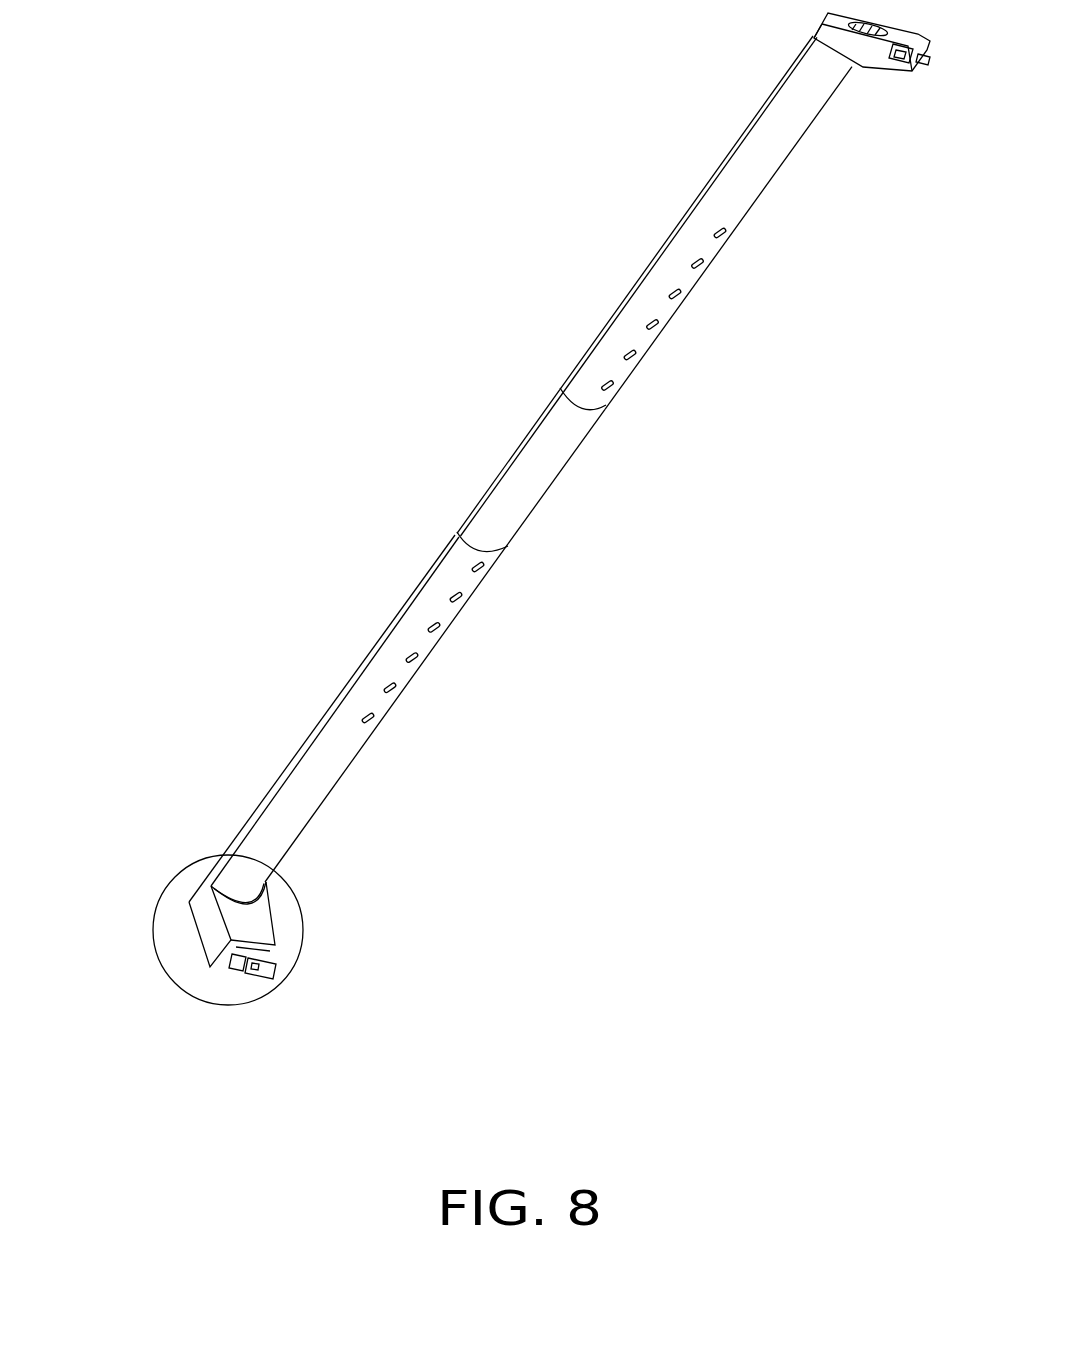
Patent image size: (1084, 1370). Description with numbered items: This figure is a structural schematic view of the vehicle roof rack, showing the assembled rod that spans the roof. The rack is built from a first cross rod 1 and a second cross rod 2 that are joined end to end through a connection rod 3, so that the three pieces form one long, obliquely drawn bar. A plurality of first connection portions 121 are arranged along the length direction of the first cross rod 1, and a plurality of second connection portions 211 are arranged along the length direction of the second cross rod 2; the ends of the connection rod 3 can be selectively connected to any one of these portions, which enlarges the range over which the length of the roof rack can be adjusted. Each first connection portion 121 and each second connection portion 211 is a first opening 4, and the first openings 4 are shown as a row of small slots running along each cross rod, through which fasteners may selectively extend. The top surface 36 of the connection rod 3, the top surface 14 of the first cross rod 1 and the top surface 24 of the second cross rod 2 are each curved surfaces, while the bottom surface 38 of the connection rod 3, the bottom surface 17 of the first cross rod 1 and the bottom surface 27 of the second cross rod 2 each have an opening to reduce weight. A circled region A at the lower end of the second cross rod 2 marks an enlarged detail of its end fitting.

The first cross rod 1 is at (728, 211).
The second cross rod 2 is at (333, 719).
The connection rod 3 is at (552, 496).
The first opening 4 is at (588, 475).
The top surface of the first cross rod 14 is at (660, 240).
The bottom surface of the first cross rod 17 is at (770, 196).
The top surface of the second cross rod 24 is at (332, 695).
The bottom surface of the second cross rod 27 is at (350, 748).
The top surface of the connection rod 36 is at (512, 450).
The bottom surface of the connection rod 38 is at (573, 436).
The first connection portion 121 is at (655, 330).
The second connection portion 211 is at (440, 628).
The detail region A is at (173, 900).